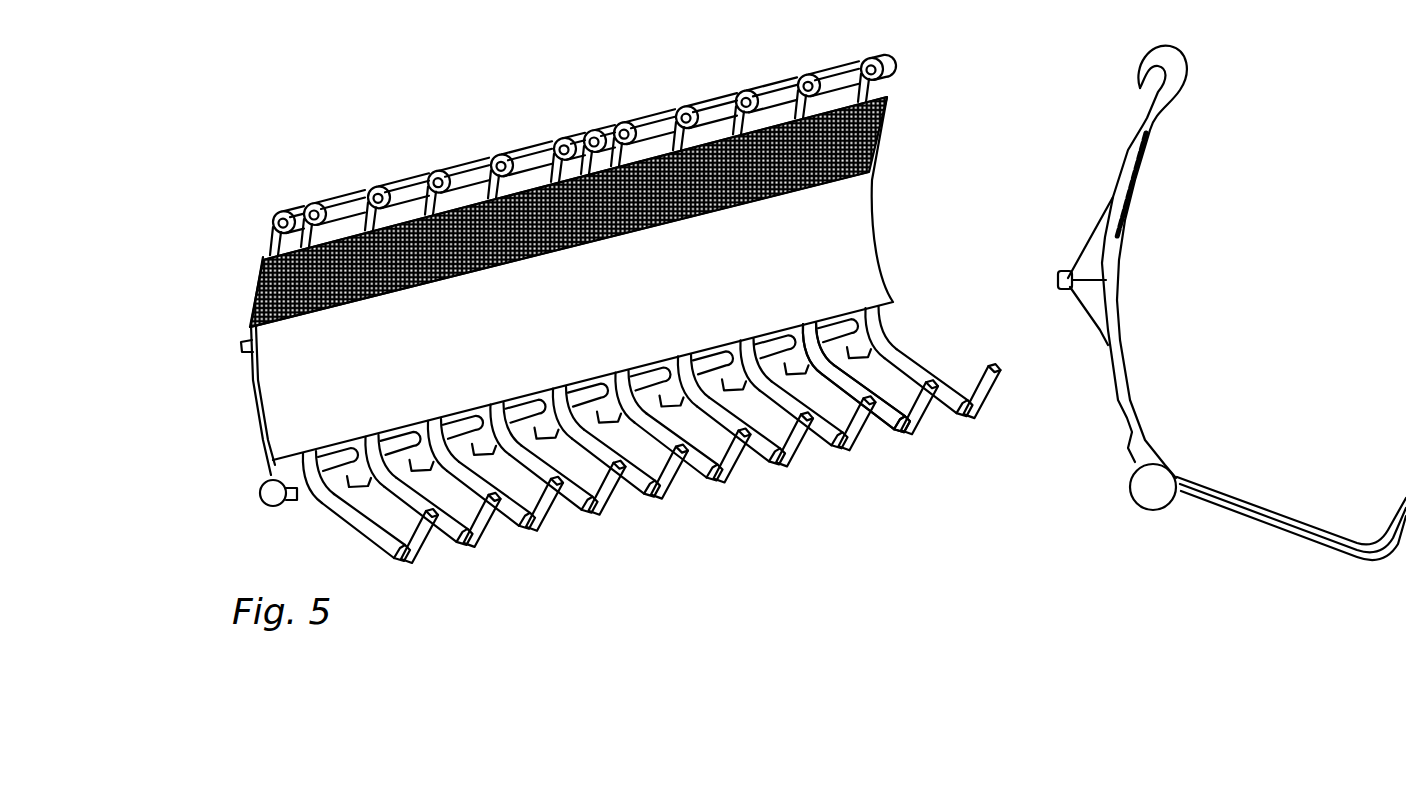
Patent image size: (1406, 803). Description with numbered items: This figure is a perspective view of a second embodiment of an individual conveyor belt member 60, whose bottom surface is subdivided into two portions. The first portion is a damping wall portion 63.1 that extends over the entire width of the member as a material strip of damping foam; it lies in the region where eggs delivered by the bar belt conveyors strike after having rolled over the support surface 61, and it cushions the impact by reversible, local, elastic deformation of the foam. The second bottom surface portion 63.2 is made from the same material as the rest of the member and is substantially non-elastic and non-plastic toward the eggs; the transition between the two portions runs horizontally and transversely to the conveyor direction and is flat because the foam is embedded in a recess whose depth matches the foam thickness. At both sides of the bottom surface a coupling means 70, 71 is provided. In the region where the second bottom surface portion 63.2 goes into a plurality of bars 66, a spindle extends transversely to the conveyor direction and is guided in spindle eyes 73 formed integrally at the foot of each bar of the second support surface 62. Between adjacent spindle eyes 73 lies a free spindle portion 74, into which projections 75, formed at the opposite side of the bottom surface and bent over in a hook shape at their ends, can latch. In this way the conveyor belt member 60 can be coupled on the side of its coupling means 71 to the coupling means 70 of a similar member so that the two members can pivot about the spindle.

The conveyor belt member 60 is at (438, 142).
The support surface 61 is at (872, 432).
The second support surface 62 is at (900, 360).
The damping wall portion 63.1 is at (826, 147).
The second bottom surface portion 63.2 is at (612, 329).
The bars 66 is at (771, 475).
The coupling means 70 is at (260, 245).
The coupling means 71 is at (250, 511).
The spindle eyes 73 is at (486, 447).
The free spindle portion 74 is at (540, 424).
The projections 75 is at (528, 178).